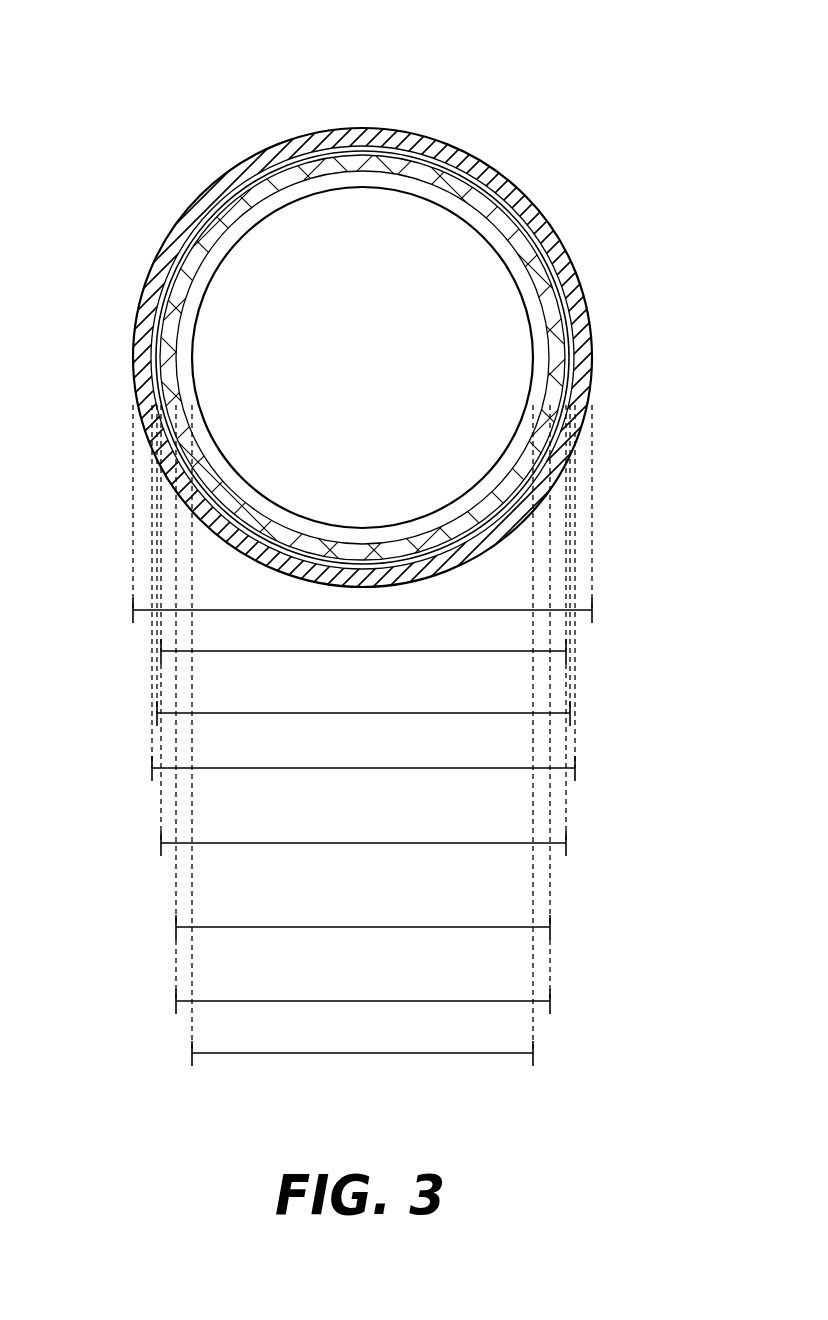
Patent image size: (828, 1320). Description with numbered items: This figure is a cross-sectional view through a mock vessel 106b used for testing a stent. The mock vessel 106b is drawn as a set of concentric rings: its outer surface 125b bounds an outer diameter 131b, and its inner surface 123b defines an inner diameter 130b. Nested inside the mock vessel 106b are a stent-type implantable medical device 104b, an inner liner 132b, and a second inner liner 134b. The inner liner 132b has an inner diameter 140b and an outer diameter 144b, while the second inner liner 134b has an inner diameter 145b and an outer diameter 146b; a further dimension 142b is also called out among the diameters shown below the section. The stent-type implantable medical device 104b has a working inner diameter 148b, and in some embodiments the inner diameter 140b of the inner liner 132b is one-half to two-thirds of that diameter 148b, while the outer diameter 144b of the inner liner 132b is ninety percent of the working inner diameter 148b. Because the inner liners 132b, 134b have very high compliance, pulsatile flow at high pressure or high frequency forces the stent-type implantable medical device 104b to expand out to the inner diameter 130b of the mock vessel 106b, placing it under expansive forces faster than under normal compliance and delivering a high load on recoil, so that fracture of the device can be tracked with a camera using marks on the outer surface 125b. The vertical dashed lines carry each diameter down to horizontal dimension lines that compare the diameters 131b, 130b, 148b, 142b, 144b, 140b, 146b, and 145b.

The stent-type implantable medical device 104b is at (293, 152).
The mock vessel 106b is at (242, 158).
The inner surface 123b is at (359, 149).
The outer surface 125b is at (196, 201).
The inner liner 132b is at (435, 181).
The second inner liner 134b is at (493, 242).
The outer diameter 131b is at (490, 610).
The inner diameter 130b is at (507, 652).
The working inner diameter 148b is at (508, 713).
The diameter of film layer 142b is at (472, 770).
The outer diameter 144b is at (498, 843).
The inner diameter 140b is at (503, 928).
The outer diameter 146b is at (505, 1002).
The inner diameter 145b is at (487, 1055).